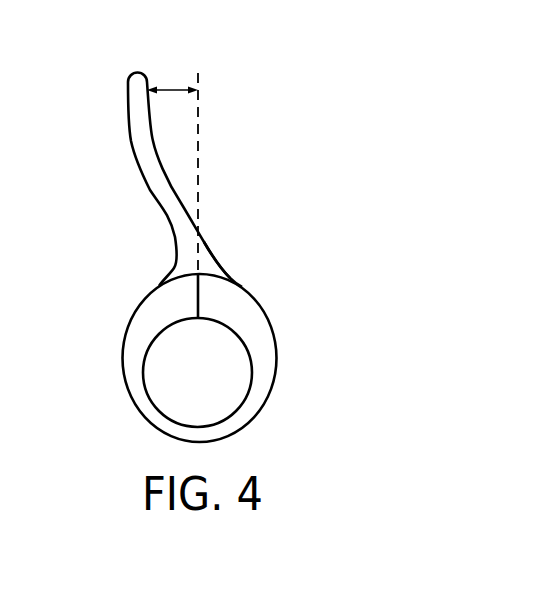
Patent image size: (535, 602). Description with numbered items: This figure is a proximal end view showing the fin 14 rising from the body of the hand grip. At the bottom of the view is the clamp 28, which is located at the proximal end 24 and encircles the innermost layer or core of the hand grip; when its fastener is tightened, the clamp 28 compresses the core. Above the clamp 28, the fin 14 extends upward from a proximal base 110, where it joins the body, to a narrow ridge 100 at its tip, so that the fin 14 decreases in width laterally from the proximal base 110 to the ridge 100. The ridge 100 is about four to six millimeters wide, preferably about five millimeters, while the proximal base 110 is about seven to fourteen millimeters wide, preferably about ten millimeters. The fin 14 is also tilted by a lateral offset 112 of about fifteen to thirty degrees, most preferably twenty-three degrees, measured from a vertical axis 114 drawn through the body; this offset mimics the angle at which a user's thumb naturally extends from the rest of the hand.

The fin 14 is at (178, 128).
The proximal end 24 is at (235, 385).
The clamp 28 is at (250, 330).
The ridge 100 is at (155, 173).
The proximal base 110 is at (205, 270).
The lateral offset 112 is at (170, 80).
The vertical axis 114 is at (198, 162).